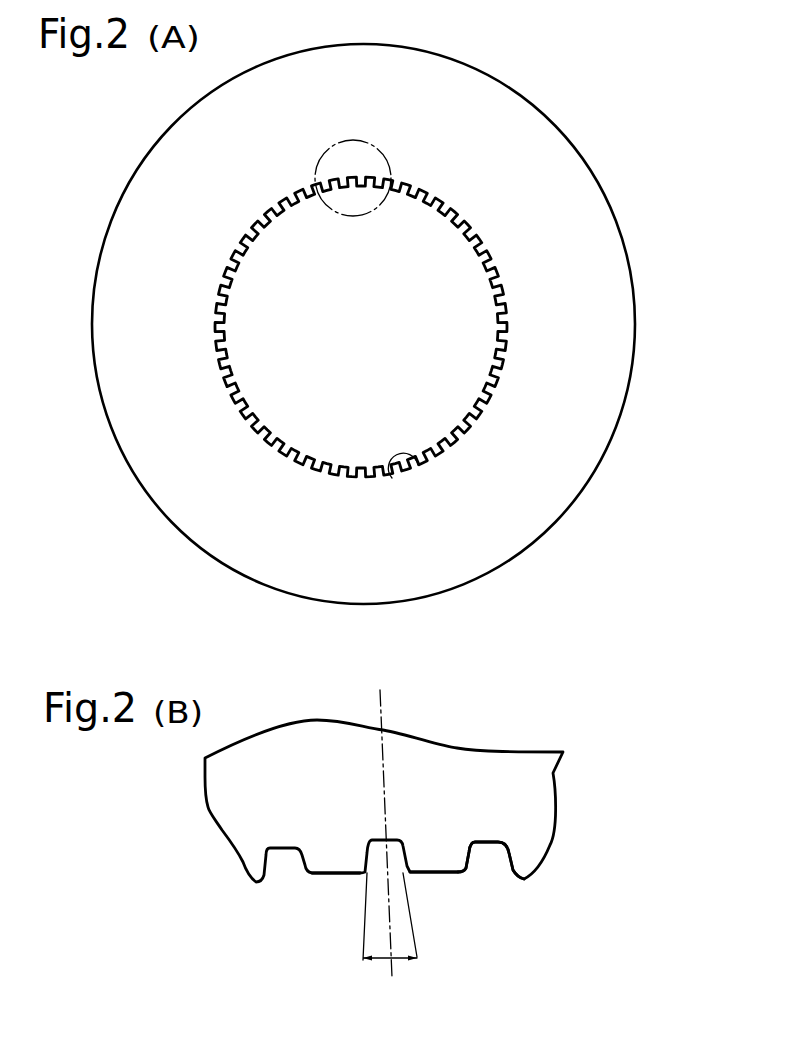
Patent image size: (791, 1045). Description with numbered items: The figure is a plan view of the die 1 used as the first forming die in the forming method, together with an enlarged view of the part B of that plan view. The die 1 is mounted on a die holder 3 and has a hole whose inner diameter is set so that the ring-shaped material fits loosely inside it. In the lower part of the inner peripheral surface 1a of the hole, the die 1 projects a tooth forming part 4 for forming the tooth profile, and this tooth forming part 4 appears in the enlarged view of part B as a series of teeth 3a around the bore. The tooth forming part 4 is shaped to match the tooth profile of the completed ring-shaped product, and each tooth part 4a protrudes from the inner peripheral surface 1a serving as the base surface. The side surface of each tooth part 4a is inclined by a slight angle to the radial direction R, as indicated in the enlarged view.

In FIG. 2A, the die 1 is at (572, 228).
In FIG. 2B, the die 1 is at (487, 775).
In FIG. 2A, the inner peripheral surface 1a is at (417, 467).
In FIG. 2A, the die holder 3 is at (483, 395).
In FIG. 2A, the teeth 3a is at (263, 427).
In FIG. 2A, the part B is at (383, 150).
In FIG. 2B, the tooth forming part 4 is at (492, 843).
In FIG. 2B, the tooth part 4a is at (325, 865).
In FIG. 2B, the radial direction R is at (390, 705).